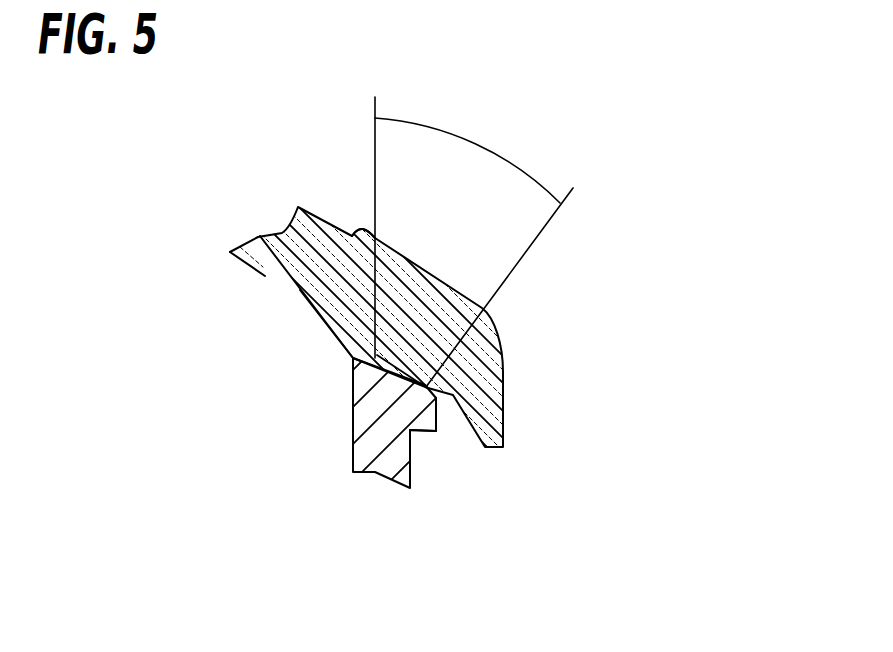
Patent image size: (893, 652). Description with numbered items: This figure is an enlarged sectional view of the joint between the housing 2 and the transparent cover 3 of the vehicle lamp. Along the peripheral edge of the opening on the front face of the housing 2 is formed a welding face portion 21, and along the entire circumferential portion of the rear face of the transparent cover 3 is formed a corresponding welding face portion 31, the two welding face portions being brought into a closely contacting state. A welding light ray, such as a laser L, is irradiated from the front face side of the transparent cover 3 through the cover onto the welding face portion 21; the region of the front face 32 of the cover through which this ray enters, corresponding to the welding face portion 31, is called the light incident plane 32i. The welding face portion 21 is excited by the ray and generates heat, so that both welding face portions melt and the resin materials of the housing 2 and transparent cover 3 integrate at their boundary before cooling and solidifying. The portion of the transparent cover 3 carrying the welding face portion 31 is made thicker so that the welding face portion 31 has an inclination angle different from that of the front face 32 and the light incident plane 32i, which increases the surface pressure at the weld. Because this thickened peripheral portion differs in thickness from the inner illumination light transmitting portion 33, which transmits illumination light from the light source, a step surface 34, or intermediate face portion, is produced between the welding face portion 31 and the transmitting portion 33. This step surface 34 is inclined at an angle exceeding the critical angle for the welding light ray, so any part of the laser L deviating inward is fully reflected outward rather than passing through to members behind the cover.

The housing 2 is at (377, 457).
The welding face portion 21 is at (431, 392).
The transparent cover 3 is at (371, 310).
The welding face portion 31 is at (395, 380).
The front face 32 is at (325, 222).
The light incident plane 32i is at (482, 317).
The illumination light transmitting portion 33 is at (238, 252).
The step surface 34 is at (333, 337).
The laser L is at (475, 158).